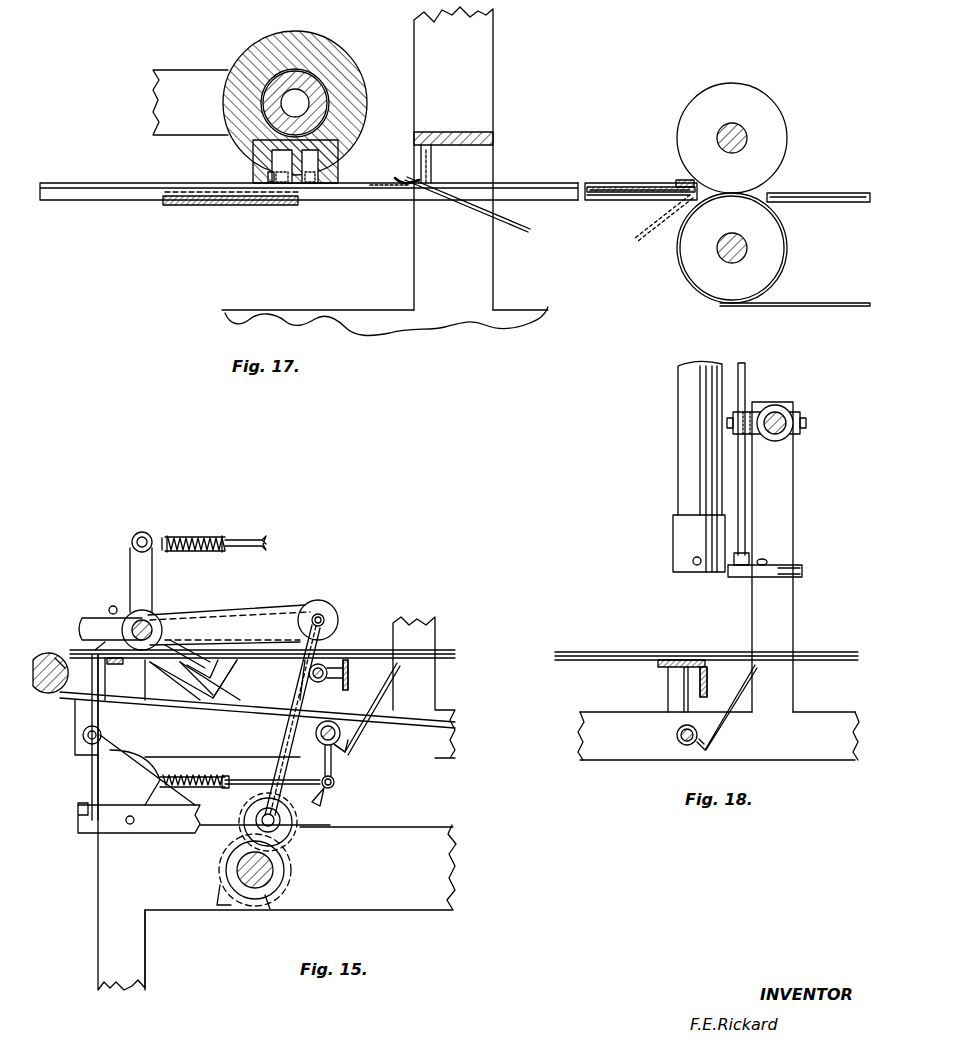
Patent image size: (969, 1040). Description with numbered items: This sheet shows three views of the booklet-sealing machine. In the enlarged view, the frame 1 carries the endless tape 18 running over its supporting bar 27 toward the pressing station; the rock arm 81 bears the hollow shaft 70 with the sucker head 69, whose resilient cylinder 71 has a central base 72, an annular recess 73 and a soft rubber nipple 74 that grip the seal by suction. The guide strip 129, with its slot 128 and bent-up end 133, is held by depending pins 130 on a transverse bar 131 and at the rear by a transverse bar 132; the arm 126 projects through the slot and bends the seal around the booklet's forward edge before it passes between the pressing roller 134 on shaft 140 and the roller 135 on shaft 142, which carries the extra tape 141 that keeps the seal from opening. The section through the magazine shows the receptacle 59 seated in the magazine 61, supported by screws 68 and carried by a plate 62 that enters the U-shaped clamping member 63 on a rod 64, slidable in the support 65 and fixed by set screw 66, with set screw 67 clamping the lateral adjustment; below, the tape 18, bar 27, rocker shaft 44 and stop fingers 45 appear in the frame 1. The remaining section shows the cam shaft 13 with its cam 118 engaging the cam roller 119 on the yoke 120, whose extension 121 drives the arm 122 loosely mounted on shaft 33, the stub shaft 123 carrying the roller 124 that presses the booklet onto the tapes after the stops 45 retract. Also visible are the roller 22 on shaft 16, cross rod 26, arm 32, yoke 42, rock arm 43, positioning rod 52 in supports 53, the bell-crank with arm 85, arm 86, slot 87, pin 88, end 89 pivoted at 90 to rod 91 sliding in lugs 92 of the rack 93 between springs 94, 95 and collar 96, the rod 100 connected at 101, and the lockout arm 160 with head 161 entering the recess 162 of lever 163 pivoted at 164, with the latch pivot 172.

In FIG. 17, the frame 1 is at (497, 40).
In FIG. 18, the frame 1 is at (790, 470).
In FIG. 15, the frame 1 is at (430, 760).
In FIG. 15, the cam shaft 13 is at (237, 868).
In FIG. 15, the shaft 16 is at (50, 695).
In FIG. 17, the endless belt or tape 18 is at (48, 183).
In FIG. 18, the endless belt or tape 18 is at (642, 652).
In FIG. 15, the endless belt or tape 18 is at (65, 650).
In FIG. 15, the roller 22 is at (45, 650).
In FIG. 15, the cross rod 26 is at (117, 666).
In FIG. 17, the supporting bar 27 is at (100, 200).
In FIG. 18, the supporting bar 27 is at (650, 665).
In FIG. 15, the supporting bar 27 is at (287, 658).
In FIG. 15, the arm 32 is at (92, 618).
In FIG. 15, the shaft 33 is at (160, 625).
In FIG. 15, the yoke 42 is at (320, 800).
In FIG. 15, the rock arm 43 is at (192, 777).
In FIG. 18, the rocker shaft 44 is at (677, 742).
In FIG. 15, the rocker shaft 44 is at (318, 740).
In FIG. 18, the finger or arm 45 is at (727, 725).
In FIG. 15, the finger or arm 45 is at (390, 688).
In FIG. 15, the slidable rod 52 is at (300, 680).
In FIG. 15, the support 53 is at (348, 672).
In FIG. 18, the receptacle 59 is at (678, 460).
In FIG. 18, the magazine 61 is at (673, 545).
In FIG. 18, the plate 62 is at (745, 577).
In FIG. 18, the U-shaped clamping member 63 is at (802, 568).
In FIG. 18, the rod 64 is at (746, 500).
In FIG. 18, the support 65 is at (765, 412).
In FIG. 18, the set screw 66 is at (740, 412).
In FIG. 18, the set screw 67 is at (762, 558).
In FIG. 18, the screw 68 is at (693, 561).
In FIG. 17, the sucker head 69 is at (352, 60).
In FIG. 17, the hollow shaft 70 is at (358, 88).
In FIG. 17, the resilient cylinder 71 is at (340, 172).
In FIG. 17, the central post or base 72 is at (282, 183).
In FIG. 17, the annular recess 73 is at (266, 172).
In FIG. 17, the soft rubber tube or nipple 74 is at (310, 183).
In FIG. 17, the rock arm 81 is at (205, 75).
In FIG. 15, the arm 85 is at (230, 780).
In FIG. 15, the arm of bell-crank lever 86 is at (215, 690).
In FIG. 15, the slot 87 is at (185, 682).
In FIG. 15, the pin 88 is at (187, 644).
In FIG. 15, the end of bell-crank lever 89 is at (130, 575).
In FIG. 15, the pivot 90 is at (132, 545).
In FIG. 15, the rod 91 is at (163, 540).
In FIG. 15, the lug 92 is at (238, 534).
In FIG. 15, the rack 93 is at (258, 542).
In FIG. 15, the spring 94 is at (186, 554).
In FIG. 15, the spring 95 is at (220, 554).
In FIG. 15, the collar 96 is at (205, 538).
In FIG. 15, the rod 100 is at (125, 700).
In FIG. 15, the connection 101 is at (110, 605).
In FIG. 15, the cam 118 is at (225, 890).
In FIG. 15, the cam roller 119 is at (256, 817).
In FIG. 15, the yoke 120 is at (294, 832).
In FIG. 15, the extension 121 is at (292, 735).
In FIG. 15, the arm 122 is at (272, 618).
In FIG. 15, the stub shaft 123 is at (326, 618).
In FIG. 15, the roller 124 is at (325, 603).
In FIG. 17, the arm 126 is at (530, 232).
In FIG. 17, the slot 128 is at (556, 183).
In FIG. 17, the guide strip 129 is at (600, 183).
In FIG. 17, the depending pin 130 is at (432, 158).
In FIG. 17, the bar 131 is at (495, 128).
In FIG. 17, the transverse bar 132 is at (680, 180).
In FIG. 17, the bent-up end 133 is at (400, 178).
In FIG. 17, the pressing roller 134 is at (788, 140).
In FIG. 17, the roller 135 is at (788, 255).
In FIG. 17, the shaft 140 is at (718, 135).
In FIG. 17, the endless band or tape 141 is at (830, 190).
In FIG. 17, the shaft 142 is at (738, 235).
In FIG. 15, the pivoted arm 160 is at (92, 777).
In FIG. 15, the head 161 is at (103, 648).
In FIG. 15, the recess 162 is at (88, 815).
In FIG. 15, the lever 163 is at (172, 825).
In FIG. 15, the pivot 164 is at (130, 825).
In FIG. 18, the pivot 172 is at (780, 418).